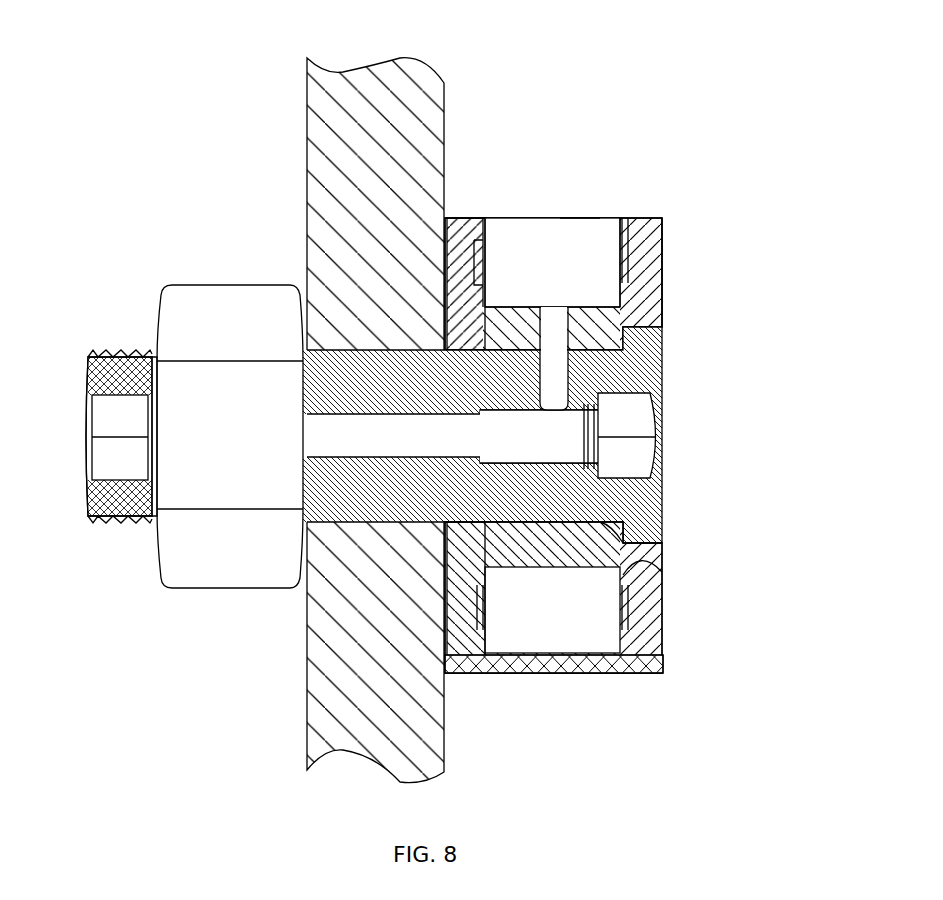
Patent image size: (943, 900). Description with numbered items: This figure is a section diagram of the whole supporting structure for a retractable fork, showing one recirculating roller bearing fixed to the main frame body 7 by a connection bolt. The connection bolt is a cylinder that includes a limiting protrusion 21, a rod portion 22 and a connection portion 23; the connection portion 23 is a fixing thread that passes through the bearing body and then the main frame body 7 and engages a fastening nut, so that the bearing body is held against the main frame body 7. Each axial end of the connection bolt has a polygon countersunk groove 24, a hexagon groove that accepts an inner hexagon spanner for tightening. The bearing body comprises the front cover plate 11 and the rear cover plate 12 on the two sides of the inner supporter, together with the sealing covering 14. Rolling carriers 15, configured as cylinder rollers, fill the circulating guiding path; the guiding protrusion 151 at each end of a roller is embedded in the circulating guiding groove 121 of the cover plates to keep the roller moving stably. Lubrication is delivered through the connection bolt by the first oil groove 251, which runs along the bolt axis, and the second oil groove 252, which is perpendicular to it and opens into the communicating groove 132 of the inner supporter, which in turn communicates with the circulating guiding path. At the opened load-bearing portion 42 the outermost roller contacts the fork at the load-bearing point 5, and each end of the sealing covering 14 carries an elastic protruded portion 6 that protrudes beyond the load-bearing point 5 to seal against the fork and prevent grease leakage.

The main frame body 7 is at (415, 92).
The protruded portion 6 is at (465, 218).
The load-bearing point 5 is at (543, 218).
The opened load-bearing portion 42 is at (578, 218).
The rolling carrier 15 is at (593, 245).
The guiding protrusion 151 is at (632, 247).
The circulating guiding groove 121 is at (632, 274).
The communicating groove 132 is at (624, 306).
The second oil groove 252 is at (568, 333).
The first oil groove 251 is at (556, 382).
The polygon countersunk groove 24 is at (638, 450).
The limiting protrusion 21 is at (662, 512).
The rod portion 22 is at (662, 548).
The front cover plate 11 is at (667, 660).
The sealing covering 14 is at (583, 673).
The rear cover plate 12 is at (458, 660).
The connection portion 23 is at (118, 525).